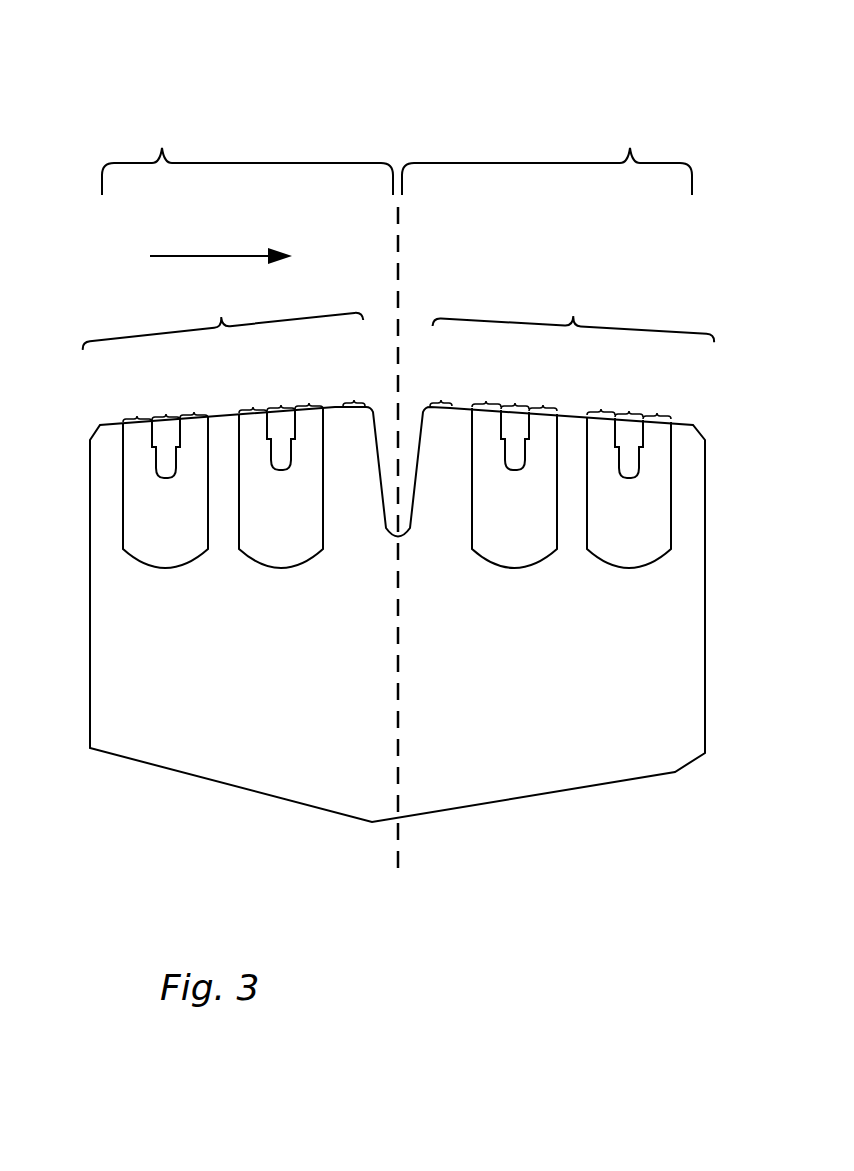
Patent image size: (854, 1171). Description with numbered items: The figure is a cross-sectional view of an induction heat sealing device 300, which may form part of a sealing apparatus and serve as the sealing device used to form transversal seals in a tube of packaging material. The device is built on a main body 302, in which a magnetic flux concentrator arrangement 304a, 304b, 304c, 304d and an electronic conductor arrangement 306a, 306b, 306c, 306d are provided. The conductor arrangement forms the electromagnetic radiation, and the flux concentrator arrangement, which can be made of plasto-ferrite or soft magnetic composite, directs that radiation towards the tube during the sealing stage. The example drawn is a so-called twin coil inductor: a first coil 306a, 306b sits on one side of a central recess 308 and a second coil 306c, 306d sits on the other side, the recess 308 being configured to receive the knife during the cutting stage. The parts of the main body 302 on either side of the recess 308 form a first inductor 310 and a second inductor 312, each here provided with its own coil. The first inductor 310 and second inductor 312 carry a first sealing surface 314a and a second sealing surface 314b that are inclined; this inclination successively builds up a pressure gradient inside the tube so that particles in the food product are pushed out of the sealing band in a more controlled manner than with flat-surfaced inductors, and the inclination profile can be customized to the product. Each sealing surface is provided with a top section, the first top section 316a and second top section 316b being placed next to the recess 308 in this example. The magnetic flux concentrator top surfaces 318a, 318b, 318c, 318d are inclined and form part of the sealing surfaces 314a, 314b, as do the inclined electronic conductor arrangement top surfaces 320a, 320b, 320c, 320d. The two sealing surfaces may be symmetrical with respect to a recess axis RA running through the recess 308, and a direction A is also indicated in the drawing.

The induction heat sealing device 300 is at (343, 95).
The main body 302 is at (203, 752).
The magnetic flux concentrator arrangement 304a is at (186, 540).
The magnetic flux concentrator arrangement 304b is at (306, 540).
The magnetic flux concentrator arrangement 304c is at (505, 540).
The magnetic flux concentrator arrangement 304d is at (630, 542).
The electronic conductor arrangement 306a is at (168, 461).
The electronic conductor arrangement 306b is at (278, 456).
The electronic conductor arrangement 306c is at (515, 457).
The electronic conductor arrangement 306d is at (630, 466).
The recess 308 is at (391, 462).
The first inductor 310 is at (247, 153).
The second inductor 312 is at (547, 154).
The first sealing surface 314a is at (222, 315).
The second sealing surface 314b is at (574, 311).
The first top section 316a is at (345, 368).
The second top section 316b is at (450, 369).
The magnetic flux concentrator top surface 318a is at (151, 382).
The magnetic flux concentrator top surface 318b is at (265, 374).
The magnetic flux concentrator top surface 318c is at (530, 375).
The magnetic flux concentrator top surface 318d is at (642, 381).
The electronic conductor arrangement top surface 320a is at (152, 384).
The electronic conductor arrangement top surface 320b is at (265, 375).
The electronic conductor arrangement top surface 320c is at (531, 376).
The electronic conductor arrangement top surface 320d is at (641, 383).
The recess axis RA is at (400, 233).
The direction of travel A is at (221, 243).